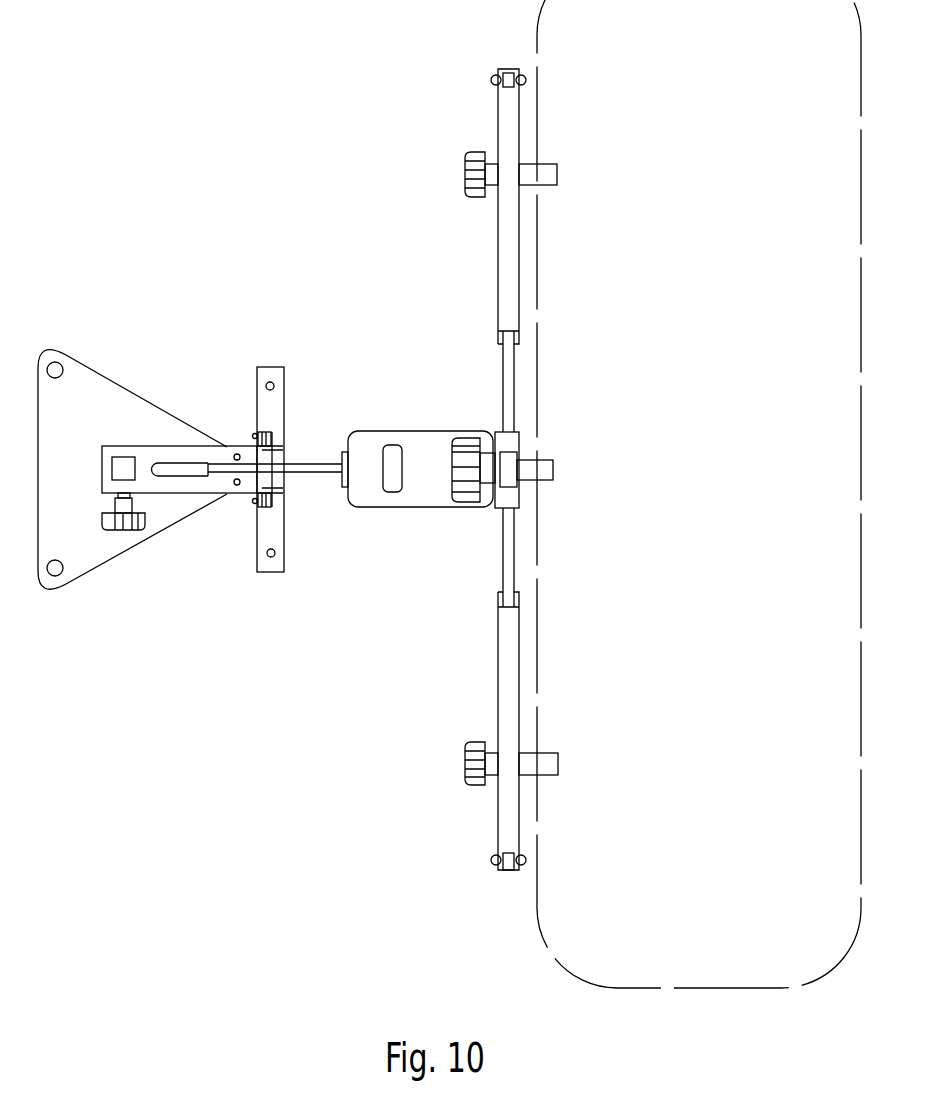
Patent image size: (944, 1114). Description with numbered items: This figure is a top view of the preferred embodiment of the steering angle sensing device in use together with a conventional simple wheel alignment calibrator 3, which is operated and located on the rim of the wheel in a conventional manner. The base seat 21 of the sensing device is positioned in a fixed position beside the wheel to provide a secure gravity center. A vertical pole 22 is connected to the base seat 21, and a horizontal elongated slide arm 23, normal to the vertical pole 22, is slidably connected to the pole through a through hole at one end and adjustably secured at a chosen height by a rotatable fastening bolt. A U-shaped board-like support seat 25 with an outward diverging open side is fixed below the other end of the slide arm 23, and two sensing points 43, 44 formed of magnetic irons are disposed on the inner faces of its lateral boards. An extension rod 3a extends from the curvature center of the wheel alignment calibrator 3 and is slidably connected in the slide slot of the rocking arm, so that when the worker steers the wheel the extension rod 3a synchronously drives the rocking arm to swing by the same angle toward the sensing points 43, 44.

The wheel alignment calibrator 3 is at (483, 118).
The extension rod 3a is at (313, 464).
The base seat 21 is at (87, 553).
The vertical pole 22 is at (123, 457).
The slide arm 23 is at (178, 483).
The support seat 25 is at (268, 573).
The sensing point 43 is at (275, 553).
The sensing point 44 is at (270, 382).